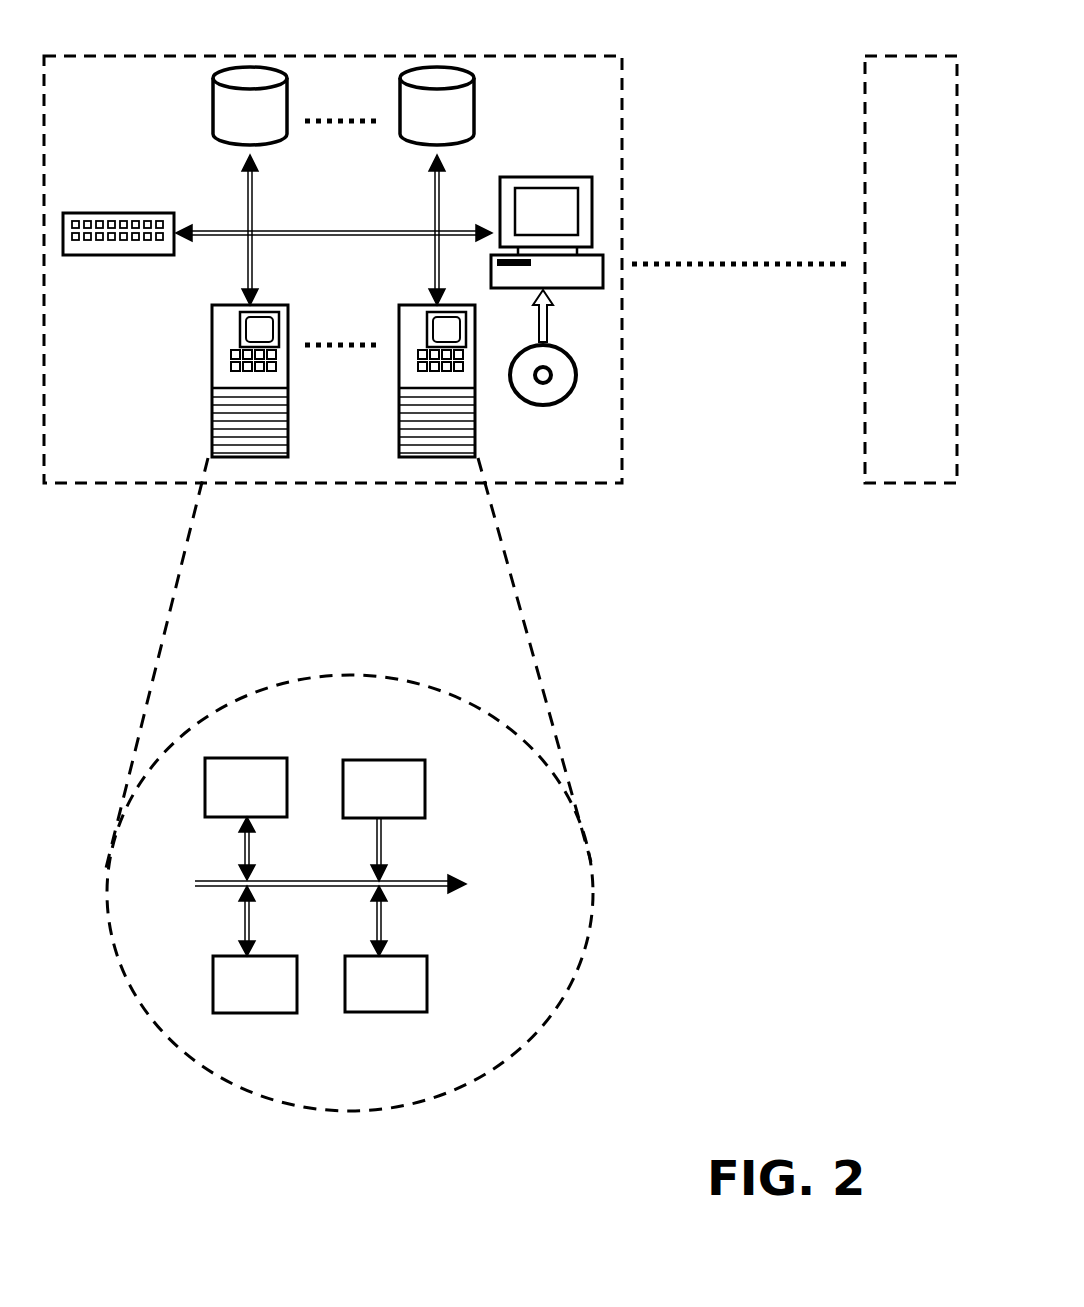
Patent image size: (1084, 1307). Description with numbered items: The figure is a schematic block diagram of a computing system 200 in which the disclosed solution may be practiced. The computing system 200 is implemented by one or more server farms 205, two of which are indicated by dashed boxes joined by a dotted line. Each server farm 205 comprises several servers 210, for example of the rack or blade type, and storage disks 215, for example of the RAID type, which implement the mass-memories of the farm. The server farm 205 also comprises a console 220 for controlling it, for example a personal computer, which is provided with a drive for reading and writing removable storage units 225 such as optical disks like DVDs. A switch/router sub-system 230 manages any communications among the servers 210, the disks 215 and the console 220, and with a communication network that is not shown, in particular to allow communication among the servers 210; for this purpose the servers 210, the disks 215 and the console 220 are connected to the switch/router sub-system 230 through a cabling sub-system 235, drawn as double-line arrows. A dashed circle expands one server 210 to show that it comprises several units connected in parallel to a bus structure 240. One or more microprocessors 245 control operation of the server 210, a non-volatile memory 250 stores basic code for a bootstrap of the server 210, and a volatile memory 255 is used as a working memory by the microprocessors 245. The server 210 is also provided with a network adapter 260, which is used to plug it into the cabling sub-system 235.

The computing system 200 is at (788, 734).
The server farm 205 is at (500, 248).
The server 210 is at (348, 586).
The storage disk 215 is at (293, 125).
The console 220 is at (551, 203).
The removable storage unit 225 is at (565, 376).
The switch/router sub-system 230 is at (124, 262).
The cabling sub-system 235 is at (334, 230).
The bus structure 240 is at (350, 893).
The microprocessor 245 is at (276, 802).
The non-volatile memory 250 is at (400, 803).
The volatile memory 255 is at (283, 976).
The network adapter 260 is at (415, 974).